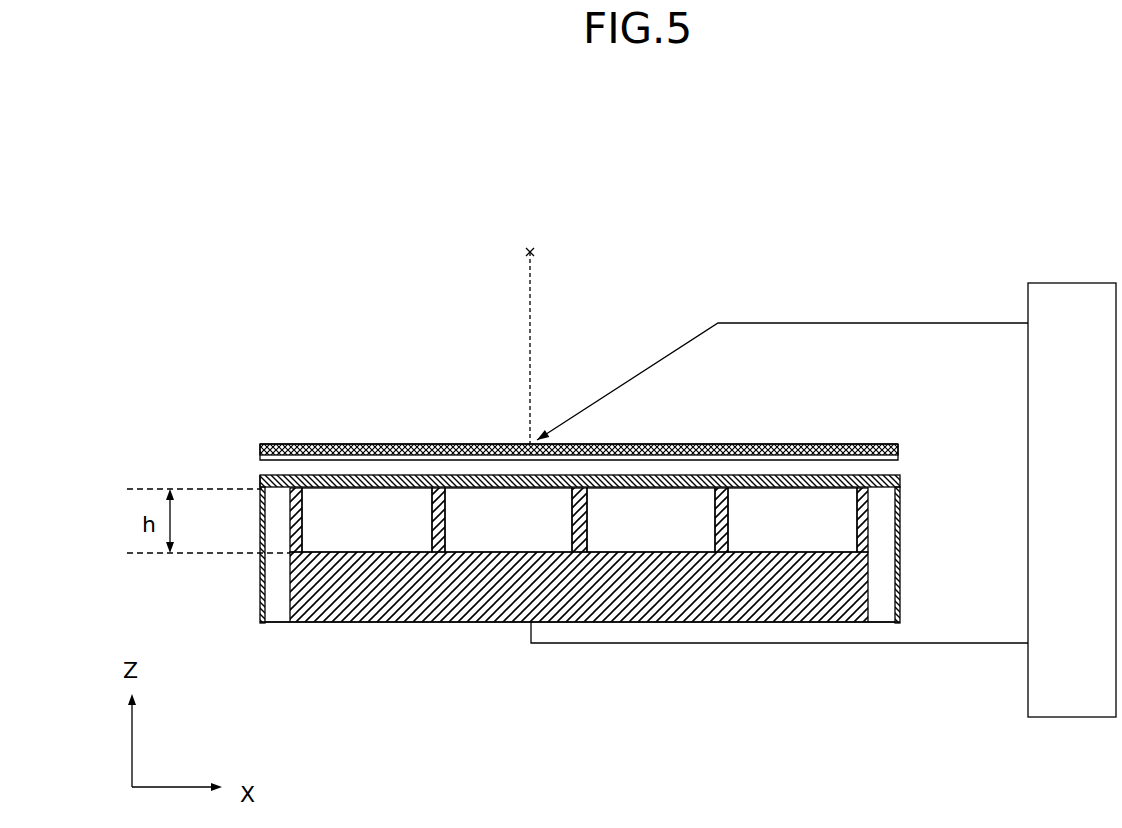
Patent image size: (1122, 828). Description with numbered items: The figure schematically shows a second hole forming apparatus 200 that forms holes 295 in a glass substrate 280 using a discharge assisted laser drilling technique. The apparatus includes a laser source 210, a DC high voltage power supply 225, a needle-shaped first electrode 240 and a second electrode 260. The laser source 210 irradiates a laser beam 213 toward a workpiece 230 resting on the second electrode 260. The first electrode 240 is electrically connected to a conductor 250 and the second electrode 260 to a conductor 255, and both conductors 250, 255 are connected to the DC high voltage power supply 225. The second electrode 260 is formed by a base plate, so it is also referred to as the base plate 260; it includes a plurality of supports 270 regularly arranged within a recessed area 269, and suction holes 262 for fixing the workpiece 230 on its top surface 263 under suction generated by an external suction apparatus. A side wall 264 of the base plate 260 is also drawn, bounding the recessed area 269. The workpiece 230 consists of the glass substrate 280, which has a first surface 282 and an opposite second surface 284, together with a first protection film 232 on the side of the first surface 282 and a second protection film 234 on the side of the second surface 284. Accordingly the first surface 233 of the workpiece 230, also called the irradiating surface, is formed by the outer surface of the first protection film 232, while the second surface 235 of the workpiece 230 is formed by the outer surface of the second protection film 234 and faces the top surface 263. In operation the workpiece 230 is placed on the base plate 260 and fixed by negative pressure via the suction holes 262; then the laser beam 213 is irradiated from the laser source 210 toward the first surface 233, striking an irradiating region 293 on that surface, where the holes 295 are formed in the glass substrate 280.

The second hole forming apparatus 200 is at (797, 247).
The laser source 210 is at (537, 252).
The laser beam 213 is at (533, 316).
The DC high voltage power supply 225 is at (1073, 283).
The workpiece 230 is at (904, 465).
The first protection film 232 is at (257, 447).
The first surface 233 is at (840, 444).
The second protection film 234 is at (258, 478).
The second surface 235 is at (758, 490).
The first electrode 240 is at (543, 437).
The conductor 250 is at (922, 323).
The conductor 255 is at (948, 642).
The second electrode 260 is at (900, 583).
The suction holes 262 is at (278, 613).
The top surface 263 is at (880, 505).
The side wall 264 is at (302, 540).
The recessed area 269 is at (507, 533).
The supports 270 is at (446, 527).
The glass substrate 280 is at (272, 463).
The first surface 282 is at (333, 462).
The second surface 284 is at (402, 482).
The irradiating region 293 is at (522, 436).
The holes 295 is at (563, 444).